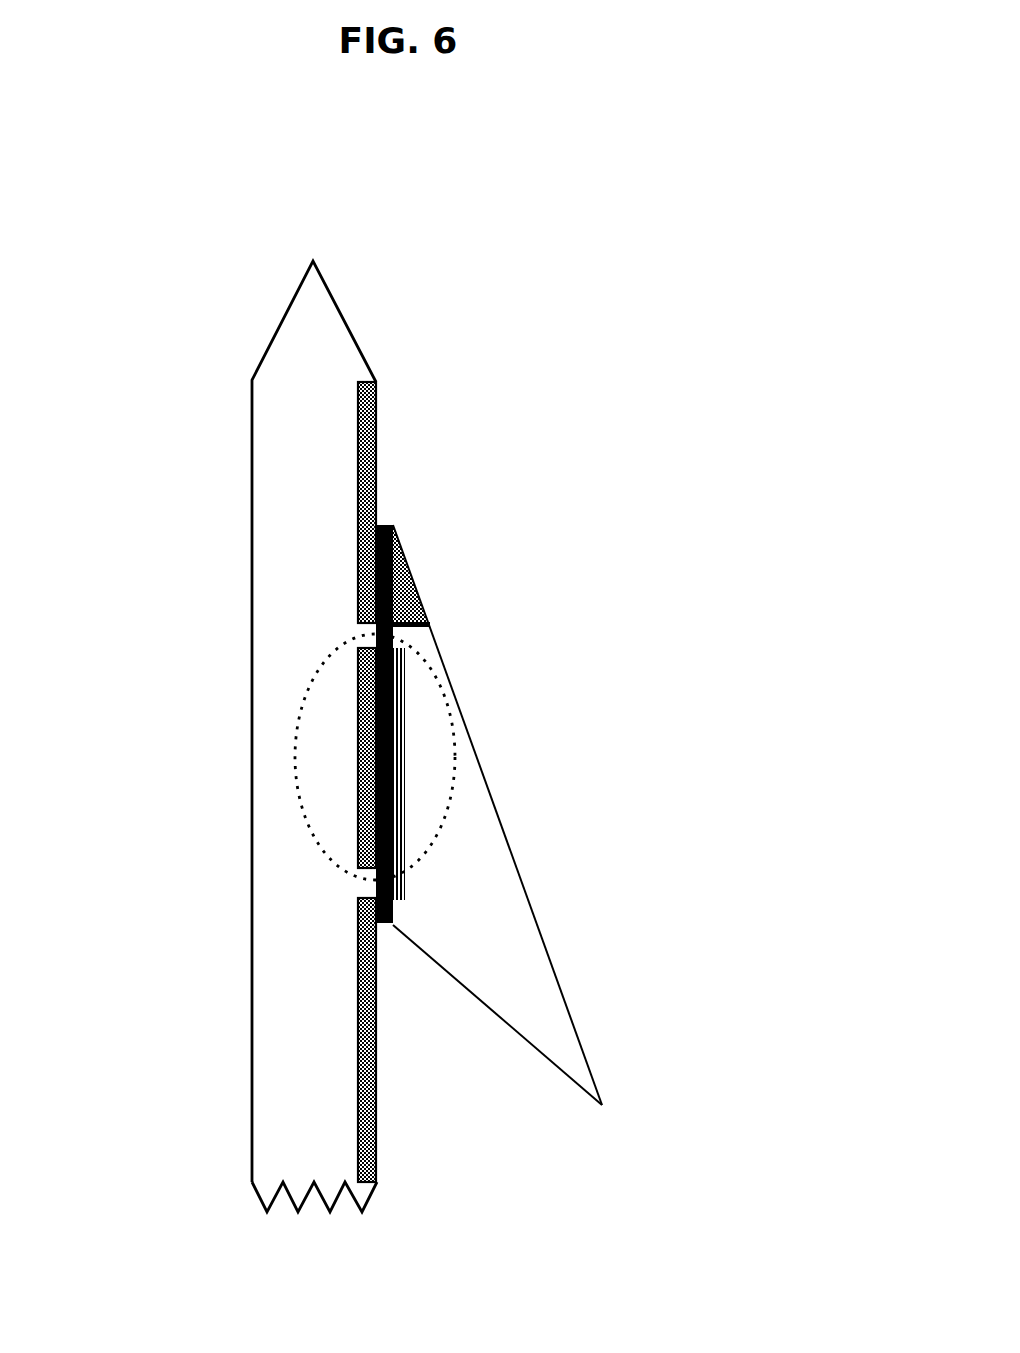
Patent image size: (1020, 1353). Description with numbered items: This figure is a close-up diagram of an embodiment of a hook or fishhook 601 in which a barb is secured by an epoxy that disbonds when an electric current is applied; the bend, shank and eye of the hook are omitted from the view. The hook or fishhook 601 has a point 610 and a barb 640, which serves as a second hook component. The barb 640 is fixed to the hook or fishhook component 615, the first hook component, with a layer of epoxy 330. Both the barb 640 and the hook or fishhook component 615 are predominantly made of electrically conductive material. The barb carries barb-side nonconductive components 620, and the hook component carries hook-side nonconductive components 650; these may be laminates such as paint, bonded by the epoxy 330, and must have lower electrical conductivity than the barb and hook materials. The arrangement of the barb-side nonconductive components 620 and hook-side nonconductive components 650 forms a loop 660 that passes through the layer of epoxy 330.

The hook or fishhook 601 is at (133, 177).
The point 610 is at (305, 736).
The hook or fishhook component 615 is at (330, 782).
The epoxy 330 is at (390, 507).
The barb-side nonconductive components 620 is at (410, 905).
The barb 640 is at (512, 815).
The hook-side nonconductive components 650 is at (356, 1000).
The loop 660 is at (440, 754).